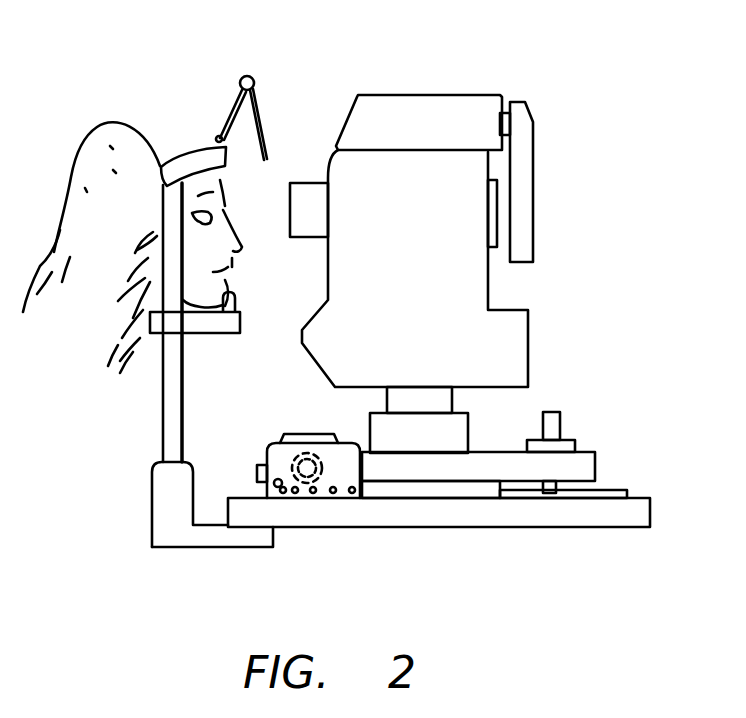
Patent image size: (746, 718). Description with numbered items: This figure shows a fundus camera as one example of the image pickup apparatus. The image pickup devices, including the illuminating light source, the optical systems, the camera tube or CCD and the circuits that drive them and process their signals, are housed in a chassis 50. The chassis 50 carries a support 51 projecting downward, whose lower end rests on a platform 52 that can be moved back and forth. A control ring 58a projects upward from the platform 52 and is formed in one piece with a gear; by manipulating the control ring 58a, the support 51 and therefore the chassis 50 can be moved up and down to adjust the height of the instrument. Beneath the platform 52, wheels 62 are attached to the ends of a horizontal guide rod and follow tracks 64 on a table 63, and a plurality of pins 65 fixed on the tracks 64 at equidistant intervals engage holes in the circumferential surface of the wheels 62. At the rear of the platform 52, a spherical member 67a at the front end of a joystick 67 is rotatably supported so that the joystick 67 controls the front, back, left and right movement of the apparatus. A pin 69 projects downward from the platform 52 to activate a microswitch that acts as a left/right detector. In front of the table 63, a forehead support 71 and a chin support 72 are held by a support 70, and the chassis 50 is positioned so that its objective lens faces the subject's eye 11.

The subject's eye 11 is at (225, 203).
The chassis 50 is at (489, 282).
The support 51 is at (455, 398).
The platform 52 is at (403, 468).
The control ring 58a is at (570, 428).
The wheels 62 is at (302, 440).
The table 63 is at (620, 518).
The tracks 64 is at (343, 500).
The pins 65 is at (289, 500).
The joystick 67 is at (549, 412).
The spherical member 67a is at (552, 492).
The pin 69 is at (498, 487).
The support 70 is at (162, 412).
The forehead support 71 is at (188, 163).
The chin support 72 is at (195, 335).